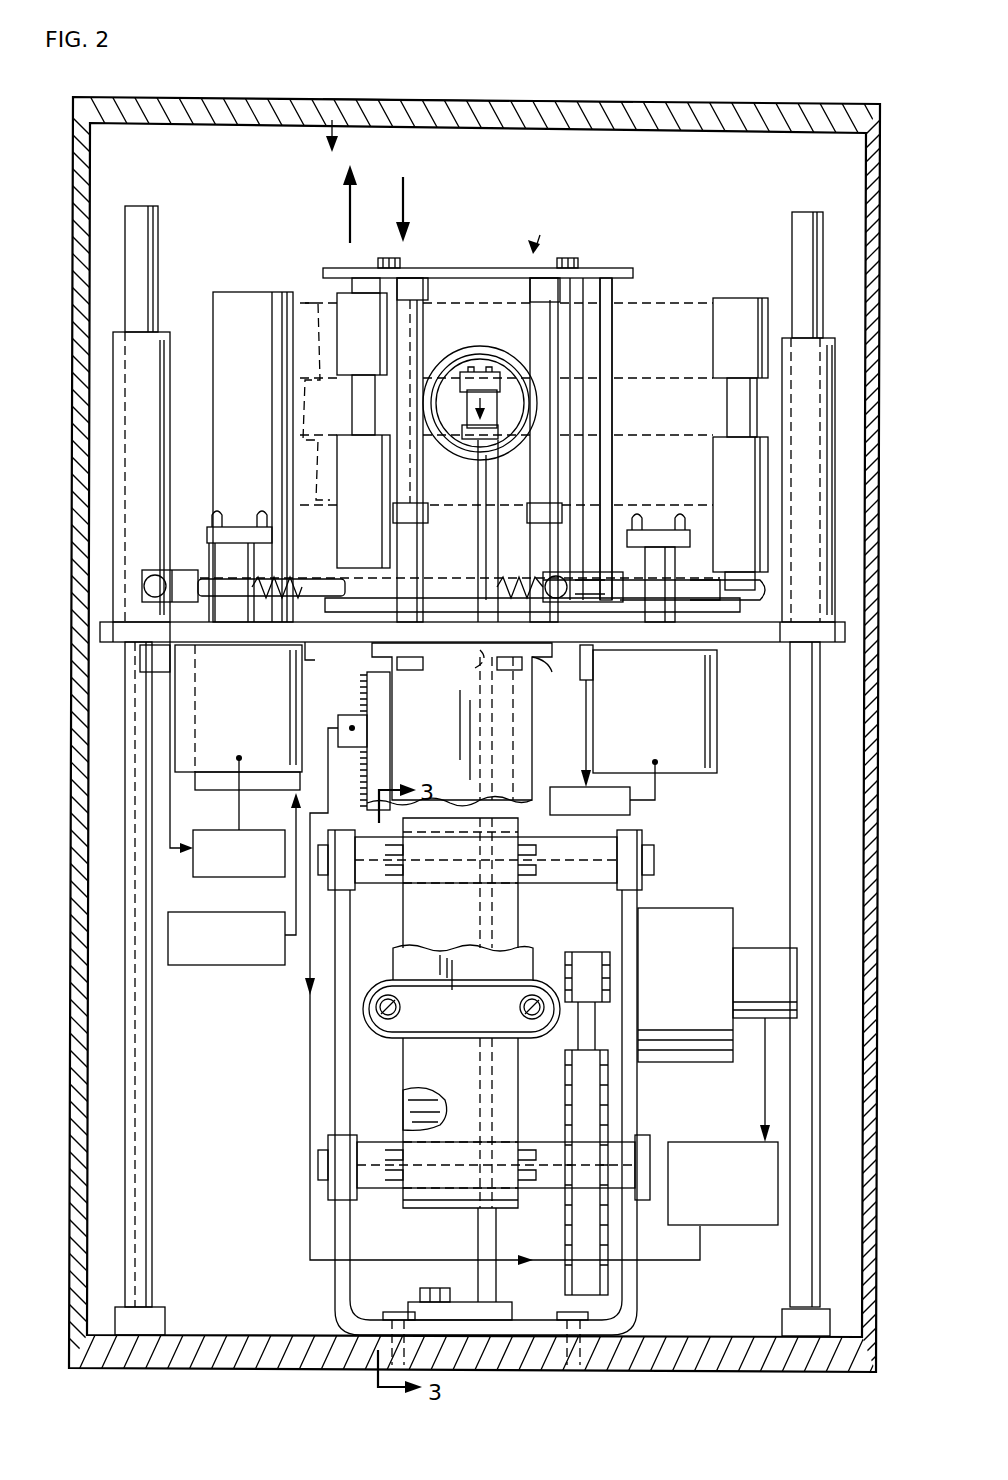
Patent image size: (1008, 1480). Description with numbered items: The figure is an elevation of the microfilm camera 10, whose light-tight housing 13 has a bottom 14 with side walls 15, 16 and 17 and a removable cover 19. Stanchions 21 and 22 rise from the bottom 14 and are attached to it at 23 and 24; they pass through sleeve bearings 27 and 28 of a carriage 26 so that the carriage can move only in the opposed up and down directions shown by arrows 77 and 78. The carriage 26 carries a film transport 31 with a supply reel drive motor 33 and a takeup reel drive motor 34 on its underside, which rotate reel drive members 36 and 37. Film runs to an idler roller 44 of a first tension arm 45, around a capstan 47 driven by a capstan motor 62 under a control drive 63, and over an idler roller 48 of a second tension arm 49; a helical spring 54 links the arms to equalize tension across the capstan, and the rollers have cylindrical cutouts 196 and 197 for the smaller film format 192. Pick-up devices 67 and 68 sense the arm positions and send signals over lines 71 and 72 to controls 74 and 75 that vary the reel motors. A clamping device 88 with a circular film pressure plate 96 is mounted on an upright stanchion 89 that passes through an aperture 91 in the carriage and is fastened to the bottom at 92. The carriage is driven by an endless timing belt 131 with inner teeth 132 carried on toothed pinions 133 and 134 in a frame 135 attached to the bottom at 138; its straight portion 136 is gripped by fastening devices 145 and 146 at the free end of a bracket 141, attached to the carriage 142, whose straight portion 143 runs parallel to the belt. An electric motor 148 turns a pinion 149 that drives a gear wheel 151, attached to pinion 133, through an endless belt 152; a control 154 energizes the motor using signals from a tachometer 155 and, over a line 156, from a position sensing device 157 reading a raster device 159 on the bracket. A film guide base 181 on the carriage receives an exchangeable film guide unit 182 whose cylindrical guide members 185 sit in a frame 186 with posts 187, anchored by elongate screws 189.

The camera 10 is at (332, 120).
The light-tight housing 13 is at (70, 193).
The bottom 14 is at (262, 1335).
The side wall 15 is at (76, 512).
The side wall 16 is at (694, 196).
The side wall 17 is at (872, 300).
The light-tight removable cover 19 is at (540, 100).
The stanchion 21 is at (152, 1135).
The stanchion 22 is at (790, 830).
The stanchion attachment 23 is at (160, 1307).
The stanchion attachment 24 is at (782, 1314).
The carriage 26 is at (100, 630).
The sleeve bearing 27 is at (113, 398).
The sleeve bearing 28 is at (835, 385).
The film transport 31 is at (640, 452).
The film supply reel drive motor 33 is at (658, 718).
The film takeup reel drive motor 34 is at (241, 720).
The supply reel drive member 36 is at (648, 528).
The takeup reel drive member 37 is at (212, 527).
The idler roller 44 is at (750, 512).
The first tension arm 45 is at (720, 602).
The capstan 47 is at (228, 300).
The idler roller 48 is at (371, 474).
The second tension arm 49 is at (320, 578).
The helical spring 54 is at (278, 578).
The capstan motor 62 is at (225, 790).
The control drive 63 is at (210, 966).
The angular position pick-up device 67 is at (593, 665).
The angular position pick-up device 68 is at (140, 672).
The line 71 is at (586, 740).
The line 72 is at (170, 768).
The control 74 is at (600, 814).
The control 75 is at (244, 867).
The up direction arrow 77 is at (350, 205).
The down direction arrow 78 is at (404, 194).
The clamping device 88 is at (486, 390).
The upright bracket or stanchion 89 is at (478, 540).
The aperture 91 is at (472, 668).
The fastening location 92 is at (420, 1290).
The film pressure plate 96 is at (498, 372).
The endless timing belt 131 is at (452, 926).
The teeth 132 is at (403, 1100).
The toothed pinion 133 is at (375, 1200).
The toothed pinion 134 is at (552, 885).
The frame 135 is at (637, 1112).
The straight portion 136 is at (460, 1084).
The frame attachment 138 is at (383, 1316).
The bracket 141 is at (448, 721).
The carriage 142 is at (528, 672).
The straight portion 143 is at (535, 965).
The fastening device 145 is at (390, 1052).
The fastening device 146 is at (400, 1007).
The electric motor 148 is at (696, 996).
The pinion 149 is at (612, 960).
The gear wheel 151 is at (572, 1105).
The belt 152 is at (600, 1035).
The control 154 is at (740, 1226).
The tachometer 155 is at (781, 986).
The line 156 is at (310, 1094).
The carriage position sensing device 157 is at (350, 715).
The gray scale or line raster device 159 is at (378, 765).
The film guide base 181 is at (315, 650).
The film guide unit 182 is at (540, 240).
The cylindrical film guide member 185 is at (535, 270).
The frame 186 is at (340, 268).
The cylindrical post 187 is at (352, 286).
The elongate screw 189 is at (395, 258).
The second format film 192 is at (690, 378).
The cylindrical cutout 196 is at (727, 410).
The cylindrical cutout 197 is at (300, 408).